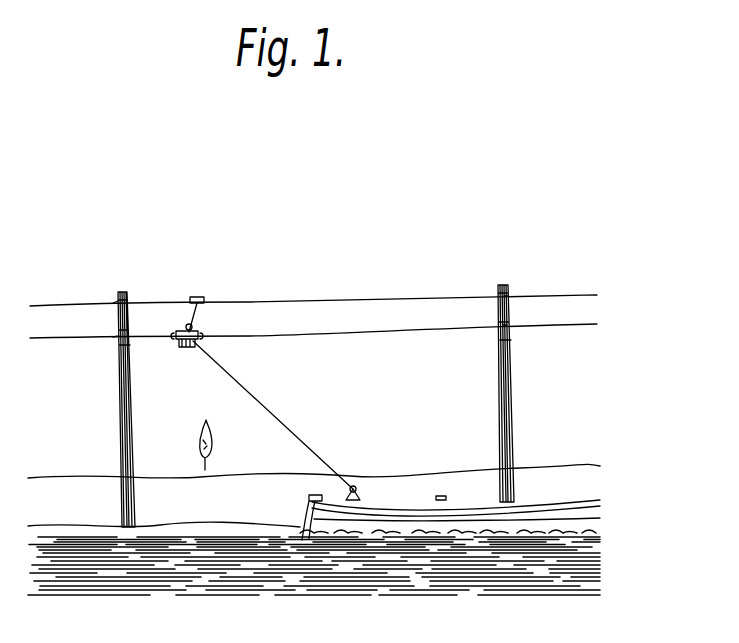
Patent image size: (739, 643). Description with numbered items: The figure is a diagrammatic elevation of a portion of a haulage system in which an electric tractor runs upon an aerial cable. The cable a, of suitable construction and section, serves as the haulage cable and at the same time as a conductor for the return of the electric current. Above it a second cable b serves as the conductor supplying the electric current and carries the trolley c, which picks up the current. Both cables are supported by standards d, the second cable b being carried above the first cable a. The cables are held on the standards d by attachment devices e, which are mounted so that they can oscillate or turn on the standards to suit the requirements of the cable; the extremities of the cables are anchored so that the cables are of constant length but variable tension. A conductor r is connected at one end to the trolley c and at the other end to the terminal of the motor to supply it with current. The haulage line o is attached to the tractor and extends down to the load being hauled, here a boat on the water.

The cable a is at (343, 336).
The second cable b is at (340, 301).
The trolley c is at (196, 298).
The standards d is at (118, 401).
The attachment devices e is at (117, 303).
The conductor r is at (252, 337).
The haulage line o is at (273, 415).